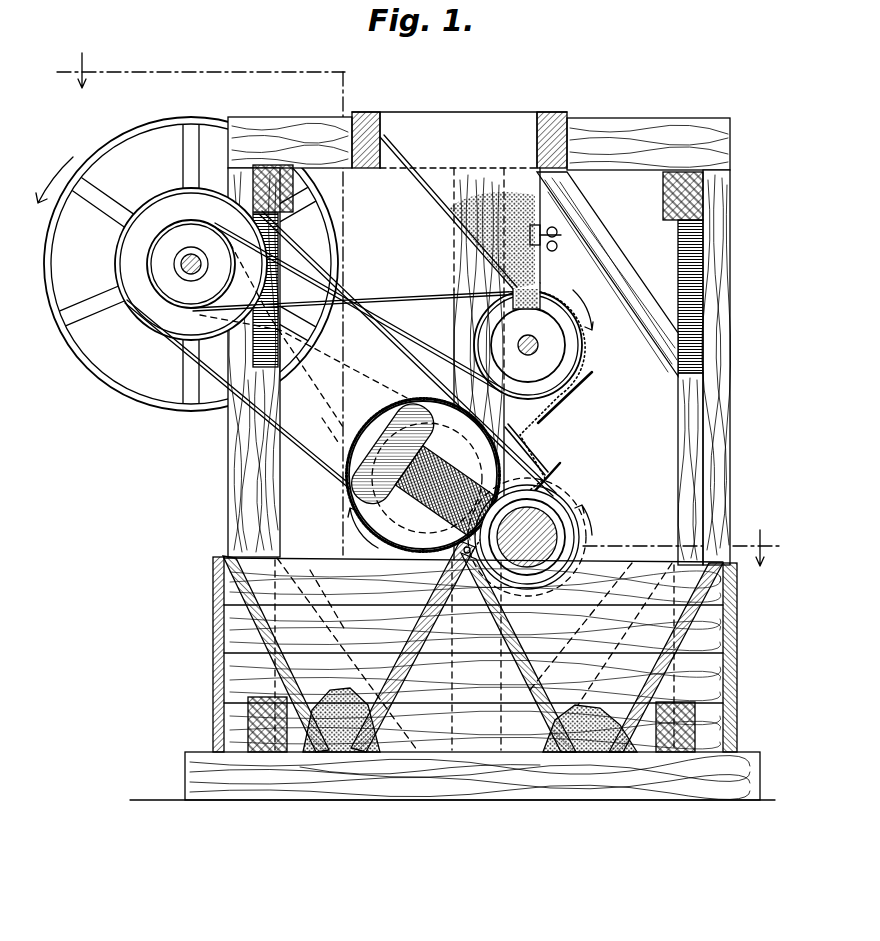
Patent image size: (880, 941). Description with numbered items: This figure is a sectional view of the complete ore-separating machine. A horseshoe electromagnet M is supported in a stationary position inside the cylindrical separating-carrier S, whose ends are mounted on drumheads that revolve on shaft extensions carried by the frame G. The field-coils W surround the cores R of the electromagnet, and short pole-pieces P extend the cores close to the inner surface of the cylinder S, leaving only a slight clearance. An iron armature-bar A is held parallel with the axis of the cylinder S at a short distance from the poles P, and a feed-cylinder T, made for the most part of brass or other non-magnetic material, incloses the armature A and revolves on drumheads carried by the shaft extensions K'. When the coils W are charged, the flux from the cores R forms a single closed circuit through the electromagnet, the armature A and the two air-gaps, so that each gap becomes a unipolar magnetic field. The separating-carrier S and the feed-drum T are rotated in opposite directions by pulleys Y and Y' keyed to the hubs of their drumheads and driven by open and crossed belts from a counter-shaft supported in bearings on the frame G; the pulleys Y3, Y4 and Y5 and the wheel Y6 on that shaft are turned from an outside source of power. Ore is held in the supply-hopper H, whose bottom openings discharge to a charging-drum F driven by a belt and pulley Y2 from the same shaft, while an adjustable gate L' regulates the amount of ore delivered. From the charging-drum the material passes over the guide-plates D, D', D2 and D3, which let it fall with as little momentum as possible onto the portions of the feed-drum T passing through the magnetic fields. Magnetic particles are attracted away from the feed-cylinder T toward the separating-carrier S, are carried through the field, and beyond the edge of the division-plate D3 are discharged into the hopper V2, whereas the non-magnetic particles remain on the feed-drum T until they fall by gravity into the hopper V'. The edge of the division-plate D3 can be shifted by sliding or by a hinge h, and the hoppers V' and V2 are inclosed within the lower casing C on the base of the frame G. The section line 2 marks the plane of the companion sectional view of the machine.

The frame G is at (241, 466).
The supply-hopper H is at (459, 140).
The spout gate pivot L' is at (578, 224).
The fly-wheel Y6 is at (108, 140).
The large pulley Y5 is at (150, 198).
The small pulley Y4 is at (170, 231).
The driving shaft Y3 is at (195, 218).
The pulley Y is at (340, 353).
The feed pulley Y2 is at (584, 345).
The charging-drum F is at (552, 375).
The guide-plate D is at (565, 398).
The guide-plate D' is at (548, 449).
The guide-plate D2 is at (556, 470).
The division-plate D3 is at (444, 581).
The armature-bar A is at (531, 423).
The separating-carrier S is at (349, 495).
The field-coils W is at (428, 512).
The cores R is at (395, 453).
The pole-pieces P is at (484, 470).
The electromagnet M is at (357, 432).
The pulley Y' is at (540, 537).
The feed-cylinder T is at (565, 525).
The section line 2 is at (413, 309).
The receiving bin C is at (266, 663).
The shaft extensions K' is at (518, 652).
The hinge h is at (447, 632).
The hopper V2 is at (311, 570).
The hopper V' is at (601, 623).